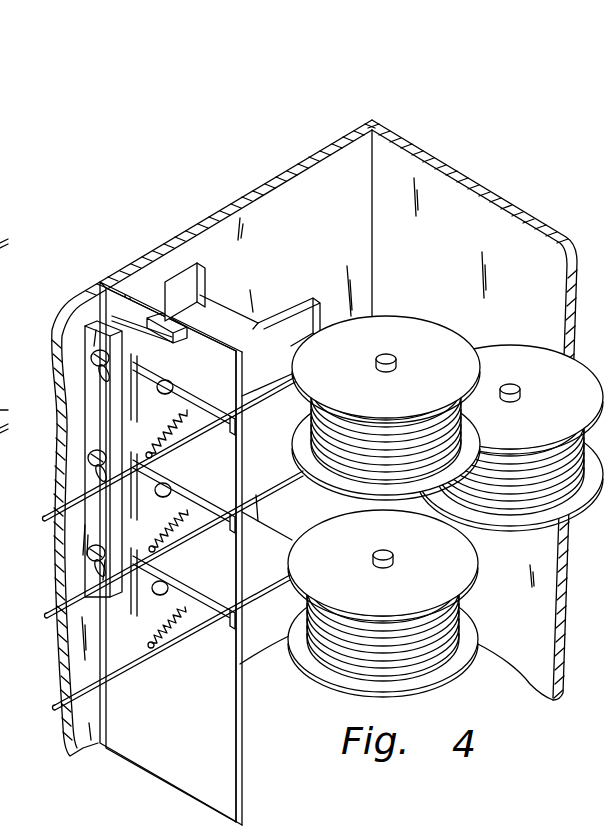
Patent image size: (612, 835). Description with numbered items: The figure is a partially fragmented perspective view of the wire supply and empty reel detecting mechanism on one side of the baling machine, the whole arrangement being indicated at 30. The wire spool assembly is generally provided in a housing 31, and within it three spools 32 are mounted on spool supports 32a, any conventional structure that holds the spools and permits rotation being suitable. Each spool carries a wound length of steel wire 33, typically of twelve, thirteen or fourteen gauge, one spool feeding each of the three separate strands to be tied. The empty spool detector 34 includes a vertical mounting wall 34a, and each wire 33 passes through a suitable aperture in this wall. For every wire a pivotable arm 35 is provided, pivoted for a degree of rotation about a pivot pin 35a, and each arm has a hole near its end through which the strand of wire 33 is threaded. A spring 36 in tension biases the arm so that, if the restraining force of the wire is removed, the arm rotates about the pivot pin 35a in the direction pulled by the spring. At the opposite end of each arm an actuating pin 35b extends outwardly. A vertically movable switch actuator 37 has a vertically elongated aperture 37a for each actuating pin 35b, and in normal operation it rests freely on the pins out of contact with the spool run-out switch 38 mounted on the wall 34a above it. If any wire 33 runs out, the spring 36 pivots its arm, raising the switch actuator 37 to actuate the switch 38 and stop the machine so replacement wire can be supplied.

The wire storage assembly 30 is at (466, 134).
The housing 31 is at (252, 191).
The spool 32 is at (407, 318).
The spool support 32a is at (292, 312).
The wire 33 is at (580, 524).
The empty spool detector 34 is at (133, 282).
The vertical mounting wall 34a is at (243, 747).
The pivotable arm 35 is at (188, 393).
The pivot pin 35a is at (165, 383).
The actuating pin 35b is at (92, 356).
The spring 36 is at (166, 434).
The switch actuator 37 is at (90, 325).
The aperture 37a is at (99, 376).
The spool run-out switch 38 is at (182, 338).